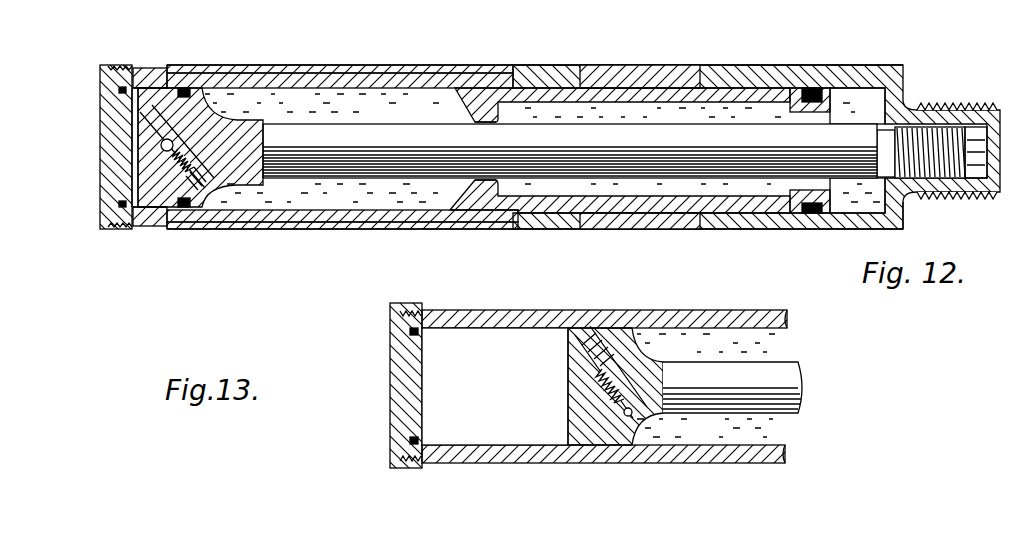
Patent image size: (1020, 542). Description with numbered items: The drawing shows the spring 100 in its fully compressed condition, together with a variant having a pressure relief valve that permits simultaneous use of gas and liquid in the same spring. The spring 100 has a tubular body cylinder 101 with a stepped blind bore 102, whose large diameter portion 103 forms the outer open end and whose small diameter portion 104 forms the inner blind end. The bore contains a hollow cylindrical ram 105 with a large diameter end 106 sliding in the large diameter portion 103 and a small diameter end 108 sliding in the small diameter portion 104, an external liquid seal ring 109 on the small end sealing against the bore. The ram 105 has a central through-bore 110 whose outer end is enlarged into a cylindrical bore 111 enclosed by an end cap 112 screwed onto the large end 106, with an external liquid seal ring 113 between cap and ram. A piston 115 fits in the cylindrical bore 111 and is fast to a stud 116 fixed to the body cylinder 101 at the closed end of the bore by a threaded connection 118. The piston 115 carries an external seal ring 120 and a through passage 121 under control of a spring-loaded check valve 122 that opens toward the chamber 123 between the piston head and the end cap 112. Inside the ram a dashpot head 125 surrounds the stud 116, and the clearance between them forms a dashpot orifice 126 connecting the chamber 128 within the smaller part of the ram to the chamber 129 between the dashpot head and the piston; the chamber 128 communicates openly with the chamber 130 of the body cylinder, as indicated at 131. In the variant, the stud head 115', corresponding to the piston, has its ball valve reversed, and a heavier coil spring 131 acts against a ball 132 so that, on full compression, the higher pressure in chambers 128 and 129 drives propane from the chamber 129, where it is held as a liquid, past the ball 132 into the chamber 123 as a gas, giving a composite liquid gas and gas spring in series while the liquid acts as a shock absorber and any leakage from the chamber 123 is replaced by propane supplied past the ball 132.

In FIG. 12, the spring 100 is at (620, 62).
In FIG. 12, the tubular body cylinder 101 is at (890, 55).
In FIG. 13, the tubular body cylinder 101 is at (760, 320).
In FIG. 12, the stepped blind bore 102 is at (857, 212).
In FIG. 12, the large diameter portion 103 is at (372, 74).
In FIG. 12, the small diameter portion 104 is at (842, 92).
In FIG. 12, the hollow cylindrical piston or ram 105 is at (180, 64).
In FIG. 12, the large diameter end 106 is at (152, 217).
In FIG. 12, the small diameter end 108 is at (662, 207).
In FIG. 12, the external liquid seal ring 109 is at (808, 215).
In FIG. 12, the central through-bore 110 is at (302, 91).
In FIG. 13, the central through-bore 110 is at (768, 336).
In FIG. 12, the cylindrical bore 111 is at (322, 210).
In FIG. 12, the end head or cap 112 is at (100, 105).
In FIG. 13, the end head or cap 112 is at (393, 348).
In FIG. 12, the external liquid seal ring 113 is at (118, 205).
In FIG. 13, the external liquid seal ring 113 is at (405, 440).
In FIG. 12, the piston 115 is at (510, 271).
In FIG. 13, the stud head 115' is at (510, 271).
In FIG. 12, the stud 116 is at (634, 143).
In FIG. 13, the stud 116 is at (795, 378).
In FIG. 12, the threaded connection 118 is at (940, 127).
In FIG. 12, the external seal ring 120 is at (184, 88).
In FIG. 12, the through passage 121 is at (150, 121).
In FIG. 12, the spring-loaded check valve 122 is at (162, 148).
In FIG. 12, the chamber 123 is at (140, 178).
In FIG. 13, the chamber 123 is at (523, 391).
In FIG. 12, the dashpot head 125 is at (487, 180).
In FIG. 12, the dashpot orifice 126 is at (492, 124).
In FIG. 12, the chamber 128 is at (610, 190).
In FIG. 12, the chamber 129 is at (385, 195).
In FIG. 13, the chamber 129 is at (775, 355).
In FIG. 12, the chamber 130 is at (872, 202).
In FIG. 12, the heavier coil spring 131 is at (822, 113).
In FIG. 13, the heavier coil spring 131 is at (608, 402).
In FIG. 13, the ball 132 is at (623, 420).